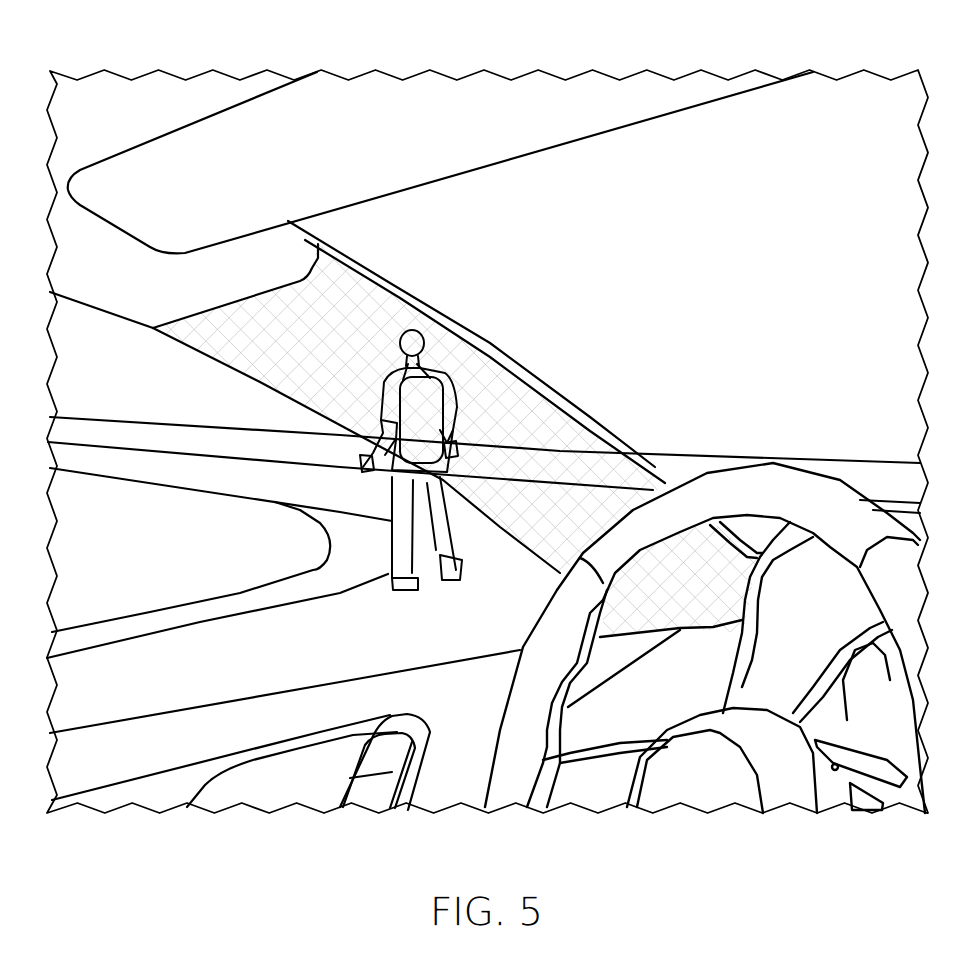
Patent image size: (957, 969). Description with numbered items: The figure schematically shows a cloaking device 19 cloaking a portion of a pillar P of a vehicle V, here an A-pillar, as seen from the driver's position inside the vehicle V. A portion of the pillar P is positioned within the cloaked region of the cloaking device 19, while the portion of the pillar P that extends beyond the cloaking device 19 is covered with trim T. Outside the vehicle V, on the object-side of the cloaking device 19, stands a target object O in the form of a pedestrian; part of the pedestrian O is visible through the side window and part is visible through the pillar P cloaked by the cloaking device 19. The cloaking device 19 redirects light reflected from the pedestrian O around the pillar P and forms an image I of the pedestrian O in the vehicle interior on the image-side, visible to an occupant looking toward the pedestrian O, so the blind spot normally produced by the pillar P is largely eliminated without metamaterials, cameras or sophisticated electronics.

The vehicle V is at (157, 98).
The pillar P is at (357, 352).
The trim T is at (297, 254).
The cloaking device 19 is at (514, 352).
The image I is at (554, 396).
The target object (pedestrian) O is at (409, 565).